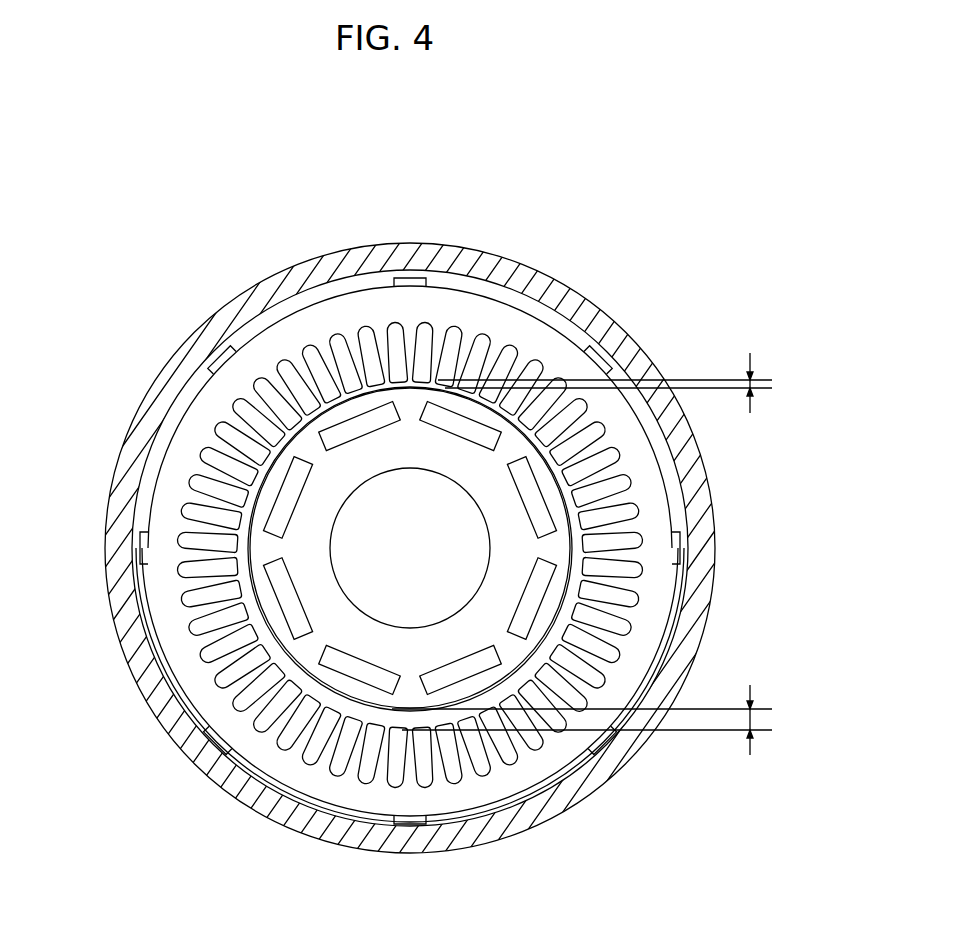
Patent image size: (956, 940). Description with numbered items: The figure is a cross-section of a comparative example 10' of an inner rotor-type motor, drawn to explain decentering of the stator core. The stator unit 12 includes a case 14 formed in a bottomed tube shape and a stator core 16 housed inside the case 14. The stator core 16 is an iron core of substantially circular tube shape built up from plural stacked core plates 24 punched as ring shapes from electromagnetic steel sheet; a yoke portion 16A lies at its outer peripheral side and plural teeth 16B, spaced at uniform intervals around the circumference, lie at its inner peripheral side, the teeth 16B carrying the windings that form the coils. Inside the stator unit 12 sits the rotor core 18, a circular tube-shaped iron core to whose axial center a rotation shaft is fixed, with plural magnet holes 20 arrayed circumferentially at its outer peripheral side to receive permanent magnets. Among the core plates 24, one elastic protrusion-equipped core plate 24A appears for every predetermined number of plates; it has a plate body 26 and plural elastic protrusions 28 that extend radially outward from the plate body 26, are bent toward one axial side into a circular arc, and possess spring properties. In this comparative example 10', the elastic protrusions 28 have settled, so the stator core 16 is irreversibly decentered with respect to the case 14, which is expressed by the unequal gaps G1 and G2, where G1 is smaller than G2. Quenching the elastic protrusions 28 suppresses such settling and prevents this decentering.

The comparative example 10' is at (410, 485).
The stator unit 12 is at (420, 529).
The case 14 is at (700, 455).
The stator core 16 is at (414, 547).
The yoke portion 16A is at (172, 445).
The teeth 16B is at (227, 673).
The rotor core 18 is at (333, 530).
The magnet holes 20 is at (457, 432).
The core plates 24 is at (410, 498).
The elastic protrusion-equipped core plate 24A is at (410, 498).
The plate body 26 is at (500, 328).
The elastic protrusions 28 is at (410, 285).
The gap G1 is at (772, 384).
The gap G2 is at (772, 720).